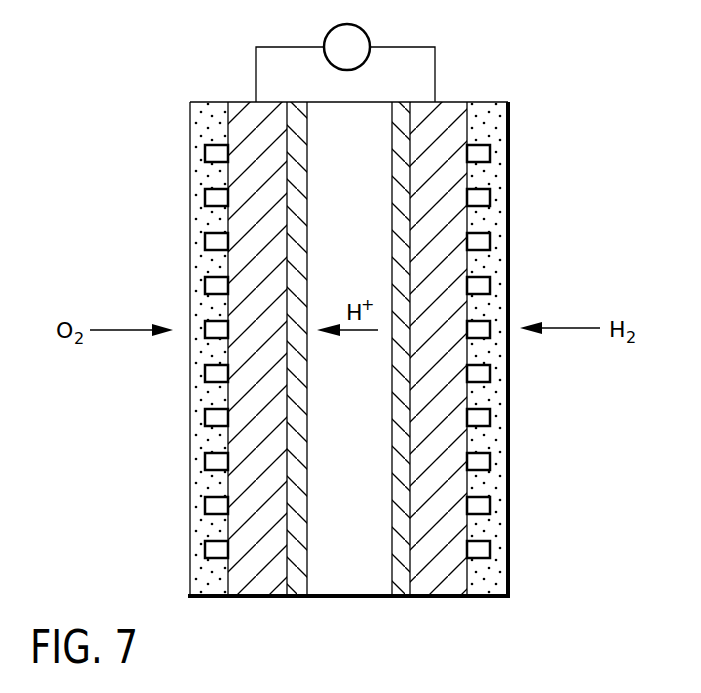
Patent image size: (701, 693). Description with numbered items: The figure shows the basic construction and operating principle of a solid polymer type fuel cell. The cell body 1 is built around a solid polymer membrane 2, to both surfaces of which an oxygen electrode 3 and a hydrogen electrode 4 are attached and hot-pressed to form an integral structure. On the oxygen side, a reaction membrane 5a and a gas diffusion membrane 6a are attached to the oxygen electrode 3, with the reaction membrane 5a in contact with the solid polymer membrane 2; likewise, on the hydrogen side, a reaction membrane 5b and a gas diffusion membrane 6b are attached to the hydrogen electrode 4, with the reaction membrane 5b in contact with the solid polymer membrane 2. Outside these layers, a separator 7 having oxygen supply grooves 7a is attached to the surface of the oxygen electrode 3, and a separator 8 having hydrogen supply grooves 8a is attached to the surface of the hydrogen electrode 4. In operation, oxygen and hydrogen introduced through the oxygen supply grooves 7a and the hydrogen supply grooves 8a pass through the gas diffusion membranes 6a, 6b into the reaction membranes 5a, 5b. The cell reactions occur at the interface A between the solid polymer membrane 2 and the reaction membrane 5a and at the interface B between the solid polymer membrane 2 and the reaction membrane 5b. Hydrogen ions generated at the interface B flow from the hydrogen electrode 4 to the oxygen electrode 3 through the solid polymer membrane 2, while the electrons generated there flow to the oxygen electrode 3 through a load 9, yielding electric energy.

The cell body 1 is at (476, 79).
The solid polymer membrane 2 is at (352, 598).
The oxygen electrode 3 is at (268, 391).
The hydrogen electrode 4 is at (422, 391).
The reaction membrane 5a is at (298, 598).
The reaction membrane 5b is at (400, 598).
The gas diffusion membrane 6a is at (264, 598).
The gas diffusion membrane 6b is at (436, 598).
The separator 7 is at (190, 128).
The oxygen supply grooves 7a is at (208, 204).
The separator 8 is at (497, 121).
The hydrogen supply grooves 8a is at (482, 151).
The load 9 is at (328, 36).
The interface A is at (310, 430).
The interface B is at (392, 482).